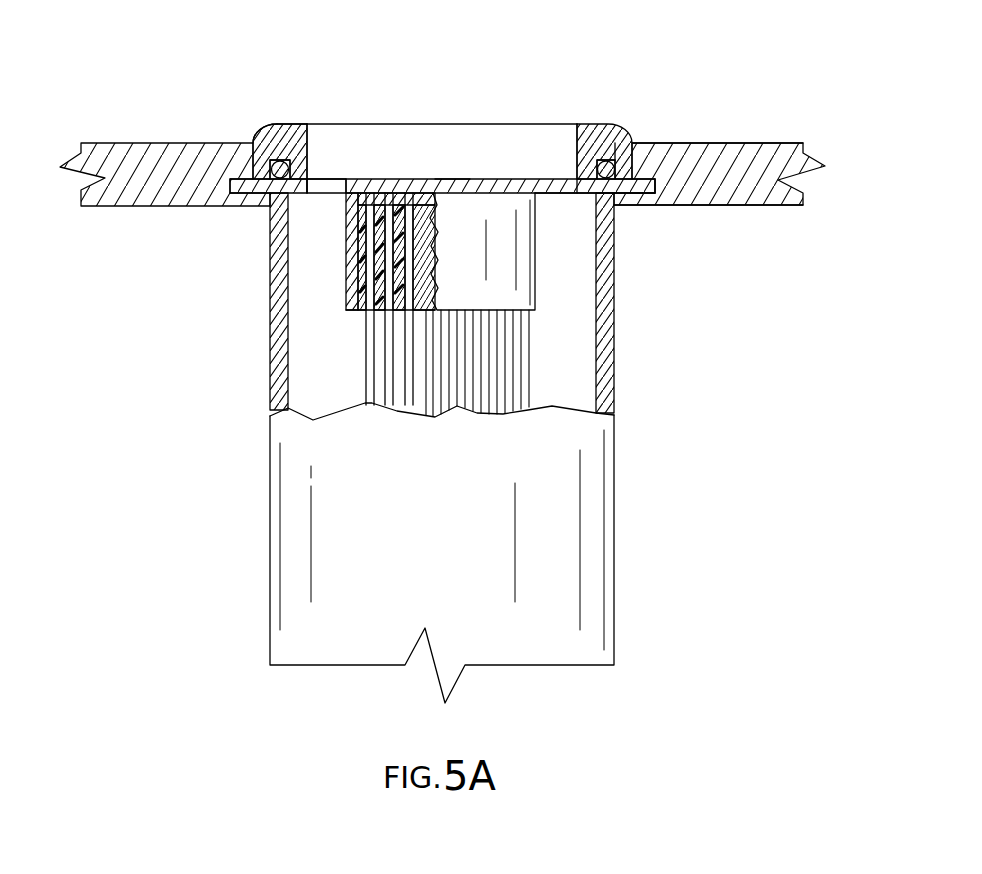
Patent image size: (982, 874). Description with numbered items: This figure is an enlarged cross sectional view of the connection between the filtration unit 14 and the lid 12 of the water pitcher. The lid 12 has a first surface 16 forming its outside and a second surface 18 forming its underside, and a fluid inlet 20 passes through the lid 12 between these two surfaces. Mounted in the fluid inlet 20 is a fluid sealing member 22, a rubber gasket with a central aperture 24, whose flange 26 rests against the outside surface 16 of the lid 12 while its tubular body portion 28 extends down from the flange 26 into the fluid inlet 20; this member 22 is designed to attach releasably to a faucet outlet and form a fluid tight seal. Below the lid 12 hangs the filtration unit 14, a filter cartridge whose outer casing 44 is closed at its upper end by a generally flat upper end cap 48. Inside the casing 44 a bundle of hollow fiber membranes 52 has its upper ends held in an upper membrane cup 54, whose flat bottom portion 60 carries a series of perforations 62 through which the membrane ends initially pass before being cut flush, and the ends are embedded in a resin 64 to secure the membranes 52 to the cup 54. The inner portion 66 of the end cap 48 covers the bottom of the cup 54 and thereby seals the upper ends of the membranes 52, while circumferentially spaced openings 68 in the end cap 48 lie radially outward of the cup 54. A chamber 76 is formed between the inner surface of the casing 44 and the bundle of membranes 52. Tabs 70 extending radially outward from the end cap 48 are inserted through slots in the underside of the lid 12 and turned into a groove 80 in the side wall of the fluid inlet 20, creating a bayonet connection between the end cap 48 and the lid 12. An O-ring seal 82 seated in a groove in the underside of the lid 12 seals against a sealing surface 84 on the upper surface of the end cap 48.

The lid 12 is at (718, 157).
The fluid filtration unit 14 is at (617, 450).
The first surface 16 is at (783, 145).
The second surface 18 is at (758, 207).
The fluid inlet 20 is at (583, 124).
The fluid sealing member 22 is at (296, 124).
The central aperture 24 is at (309, 153).
The flange 26 is at (265, 132).
The tubular body portion 28 is at (292, 157).
The outer casing 44 is at (604, 315).
The upper end cap 48 is at (496, 184).
The hollow fiber membranes 52 is at (531, 365).
The upper membrane cup 54 is at (537, 270).
The bottom portion 60 is at (380, 190).
The perforations 62 is at (403, 200).
The resin 64 is at (378, 258).
The inner portion 66 is at (452, 190).
The openings 68 is at (327, 192).
The tabs 70 is at (256, 194).
The chamber 76 is at (308, 365).
The groove 80 is at (652, 181).
The O-ring seal 82 is at (616, 168).
The sealing surface 84 is at (625, 162).